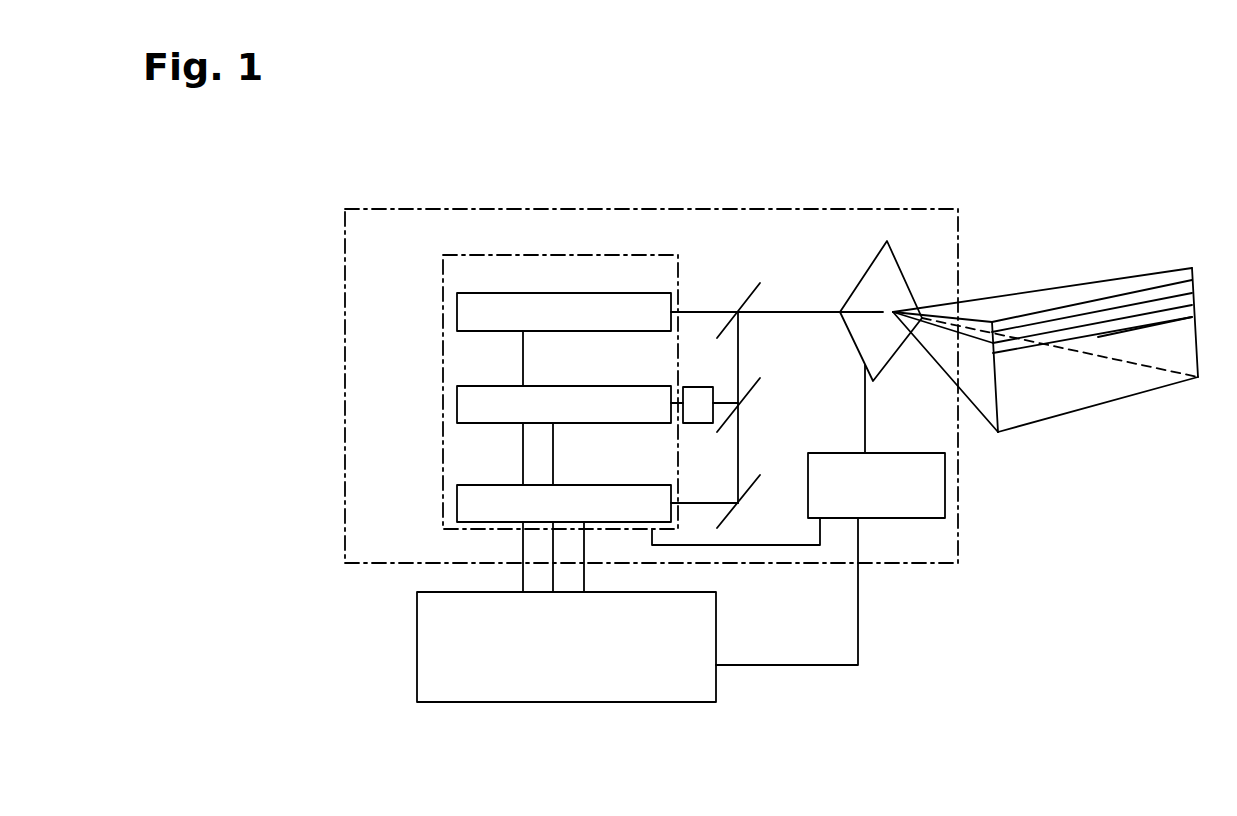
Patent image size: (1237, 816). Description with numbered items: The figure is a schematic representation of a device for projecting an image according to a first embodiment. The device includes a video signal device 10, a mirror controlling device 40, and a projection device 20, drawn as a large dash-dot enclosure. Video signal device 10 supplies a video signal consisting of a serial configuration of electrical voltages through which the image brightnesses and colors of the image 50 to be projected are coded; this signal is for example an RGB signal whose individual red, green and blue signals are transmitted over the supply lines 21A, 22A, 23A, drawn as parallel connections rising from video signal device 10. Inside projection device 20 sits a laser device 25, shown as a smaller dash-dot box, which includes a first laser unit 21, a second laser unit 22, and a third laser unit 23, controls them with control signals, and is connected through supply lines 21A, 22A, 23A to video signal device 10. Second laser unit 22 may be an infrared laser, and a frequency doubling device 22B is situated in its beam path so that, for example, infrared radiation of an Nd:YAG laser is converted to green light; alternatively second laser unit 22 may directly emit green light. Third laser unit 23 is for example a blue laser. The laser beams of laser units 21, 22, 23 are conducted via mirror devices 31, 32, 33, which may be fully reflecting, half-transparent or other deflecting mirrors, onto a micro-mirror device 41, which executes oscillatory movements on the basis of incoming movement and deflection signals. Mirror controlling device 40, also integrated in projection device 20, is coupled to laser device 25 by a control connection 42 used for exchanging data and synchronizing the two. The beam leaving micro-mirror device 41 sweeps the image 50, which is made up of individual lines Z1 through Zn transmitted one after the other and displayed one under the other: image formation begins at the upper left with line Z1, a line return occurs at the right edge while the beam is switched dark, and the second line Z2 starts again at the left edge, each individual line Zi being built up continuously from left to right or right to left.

The video signal device 10 is at (608, 703).
The projection device 20 is at (655, 209).
The first laser unit 21 is at (548, 293).
The supply line 21A is at (523, 355).
The second laser unit 22 is at (490, 400).
The supply line 22A is at (553, 448).
The frequency doubling device 22B is at (700, 387).
The third laser unit 23 is at (490, 500).
The supply line 23A is at (587, 575).
The laser device 25 is at (480, 250).
The mirror device 31 is at (745, 290).
The mirror device 32 is at (748, 393).
The mirror device 33 is at (753, 487).
The mirror controlling device 40 is at (915, 520).
The micro-mirror device 41 is at (902, 258).
The control connection 42 is at (800, 548).
The image 50 is at (1045, 344).
The line Z1 is at (1128, 292).
The line Z2 is at (1162, 290).
The line Zi is at (1143, 331).
The line Zn is at (1088, 399).